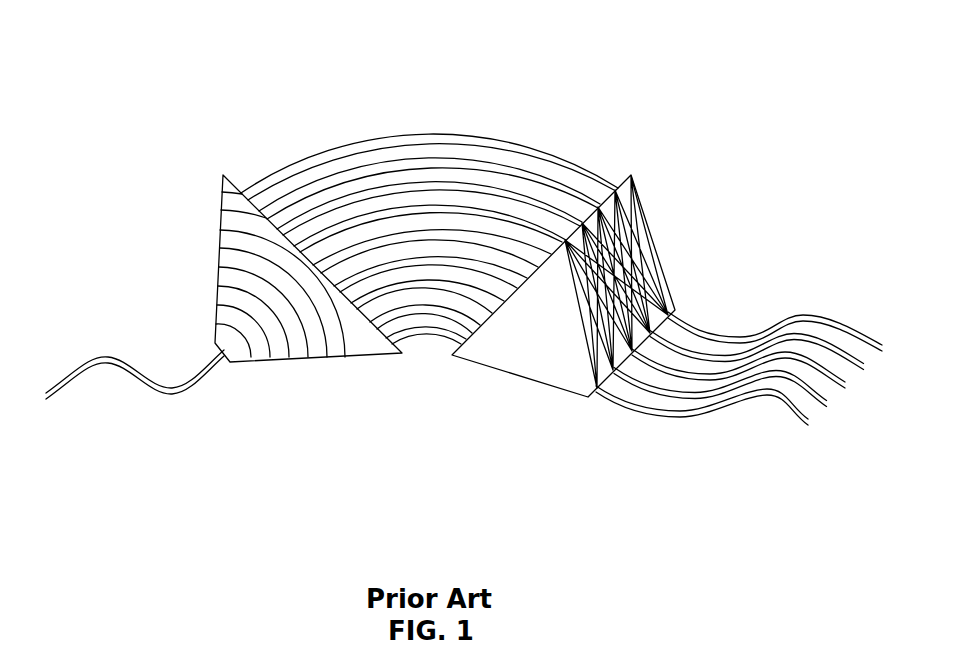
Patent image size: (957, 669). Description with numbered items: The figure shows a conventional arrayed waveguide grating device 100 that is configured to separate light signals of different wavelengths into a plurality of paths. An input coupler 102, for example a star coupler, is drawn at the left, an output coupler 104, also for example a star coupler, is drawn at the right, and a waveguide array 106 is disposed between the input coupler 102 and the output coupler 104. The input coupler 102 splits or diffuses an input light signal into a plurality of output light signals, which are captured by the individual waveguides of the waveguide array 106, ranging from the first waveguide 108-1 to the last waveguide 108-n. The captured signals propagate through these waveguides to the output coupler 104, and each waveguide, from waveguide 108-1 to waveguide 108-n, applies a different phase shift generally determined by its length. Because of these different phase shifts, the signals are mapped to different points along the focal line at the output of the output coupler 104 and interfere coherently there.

The arrayed waveguide grating device 100 is at (683, 62).
The input coupler 102 is at (316, 362).
The output coupler 104 is at (537, 384).
The waveguide array 106 is at (397, 470).
The waveguide 108-1 is at (404, 137).
The waveguide 108-n is at (428, 336).